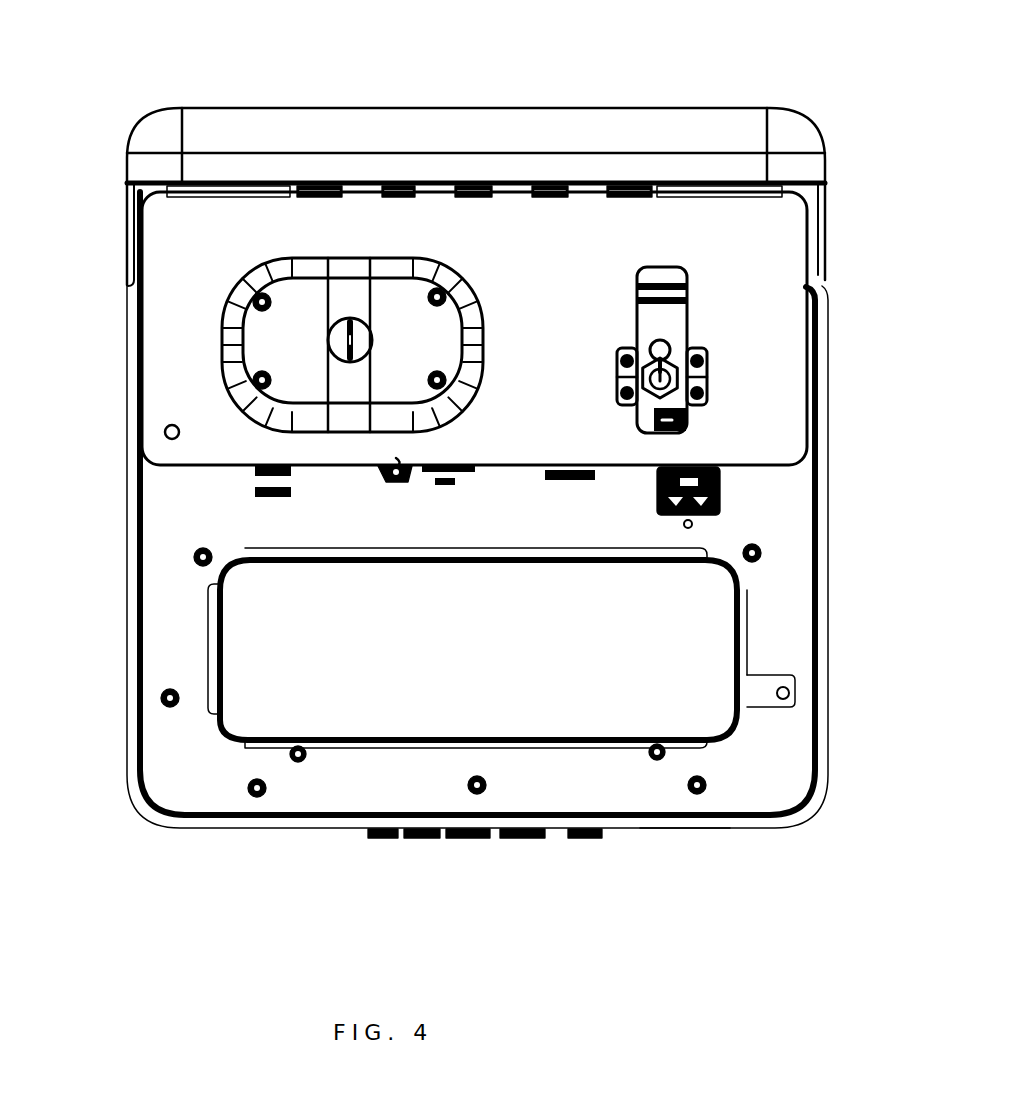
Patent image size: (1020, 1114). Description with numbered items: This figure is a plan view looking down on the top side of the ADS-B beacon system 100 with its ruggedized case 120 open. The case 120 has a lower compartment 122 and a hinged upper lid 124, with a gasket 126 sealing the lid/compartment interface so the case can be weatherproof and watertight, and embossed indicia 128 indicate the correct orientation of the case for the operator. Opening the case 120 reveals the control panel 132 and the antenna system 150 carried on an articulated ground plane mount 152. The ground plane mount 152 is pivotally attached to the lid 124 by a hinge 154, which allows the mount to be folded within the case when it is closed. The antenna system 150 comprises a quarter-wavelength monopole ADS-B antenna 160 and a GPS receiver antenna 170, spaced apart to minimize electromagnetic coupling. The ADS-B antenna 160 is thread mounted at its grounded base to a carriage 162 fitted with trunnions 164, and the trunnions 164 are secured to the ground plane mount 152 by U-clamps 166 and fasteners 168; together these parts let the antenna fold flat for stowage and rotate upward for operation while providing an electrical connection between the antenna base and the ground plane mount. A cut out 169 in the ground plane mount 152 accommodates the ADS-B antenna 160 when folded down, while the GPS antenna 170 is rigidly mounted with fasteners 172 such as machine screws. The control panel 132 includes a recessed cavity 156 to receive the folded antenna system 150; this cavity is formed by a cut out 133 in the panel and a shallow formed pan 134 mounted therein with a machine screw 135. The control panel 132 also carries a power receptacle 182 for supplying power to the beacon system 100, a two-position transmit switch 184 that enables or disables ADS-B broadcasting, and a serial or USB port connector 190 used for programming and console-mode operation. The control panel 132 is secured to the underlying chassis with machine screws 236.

The ADS-B beacon system 100 is at (92, 80).
The ruggedized case 120 is at (688, 832).
The lower compartment 122 is at (127, 772).
The hinged upper lid 124 is at (664, 106).
The gasket 126 is at (128, 268).
The embossed indicia 128 is at (470, 842).
The control panel 132 is at (213, 785).
The cut out 133 is at (225, 743).
The shallow formed pan 134 is at (208, 652).
The machine screw 135 is at (787, 698).
The antenna system 150 is at (175, 383).
The articulated ground plane mount 152 is at (790, 466).
The hinge 154 is at (500, 183).
The recessed cavity 156 is at (352, 743).
The ADS-B antenna 160 is at (680, 352).
The carriage 162 is at (648, 403).
The trunnions 164 is at (708, 372).
The U-clamps 166 is at (708, 390).
The fasteners 168 is at (620, 400).
The cut out 169 is at (637, 318).
The GPS receiver antenna 170 is at (470, 303).
The fasteners 172 is at (450, 388).
The power receptacle 182 is at (724, 496).
The two-position transmit switch 184 is at (382, 486).
The port connector 190 is at (250, 478).
The machine screws 236 is at (761, 555).